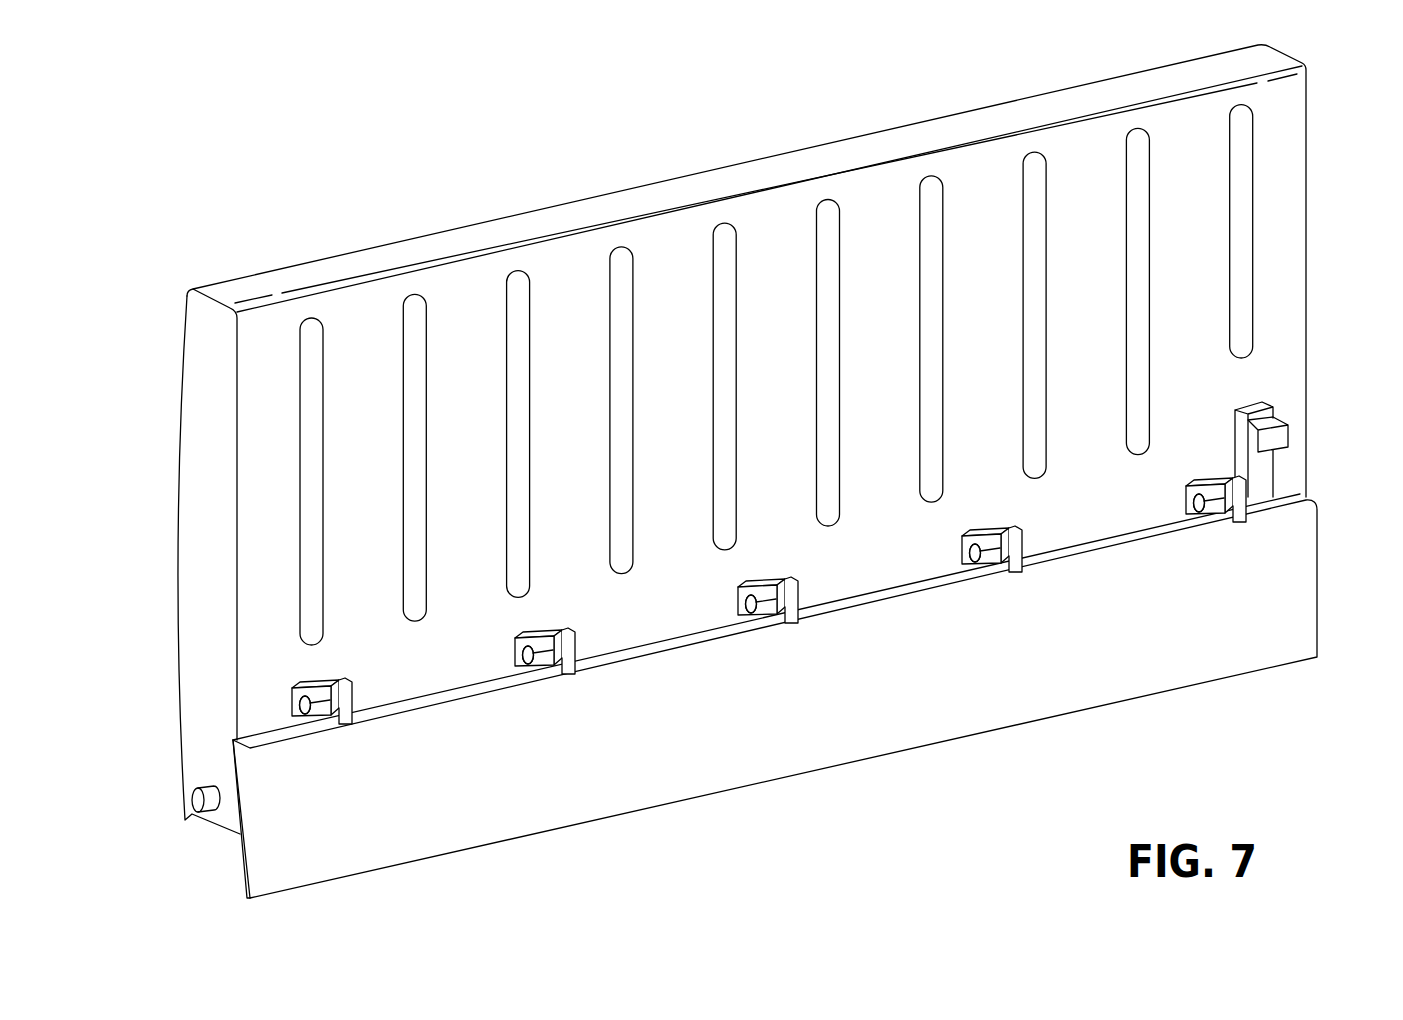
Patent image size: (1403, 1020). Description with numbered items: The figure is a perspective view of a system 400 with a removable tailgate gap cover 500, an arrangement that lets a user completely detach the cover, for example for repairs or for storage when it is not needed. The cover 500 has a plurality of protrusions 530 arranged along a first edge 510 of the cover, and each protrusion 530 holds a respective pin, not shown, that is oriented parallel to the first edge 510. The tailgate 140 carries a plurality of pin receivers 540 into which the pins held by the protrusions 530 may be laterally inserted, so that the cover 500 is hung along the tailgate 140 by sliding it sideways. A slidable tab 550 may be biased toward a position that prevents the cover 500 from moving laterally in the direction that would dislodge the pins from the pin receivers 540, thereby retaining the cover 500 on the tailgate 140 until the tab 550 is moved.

The tailgate 140 is at (193, 467).
The system 400 is at (750, 472).
The removable tailgate gap cover 500 is at (818, 696).
The first edge 510 is at (640, 653).
The protrusions 530 is at (350, 694).
The pin receivers 540 is at (297, 715).
The slidable tab 550 is at (1280, 437).